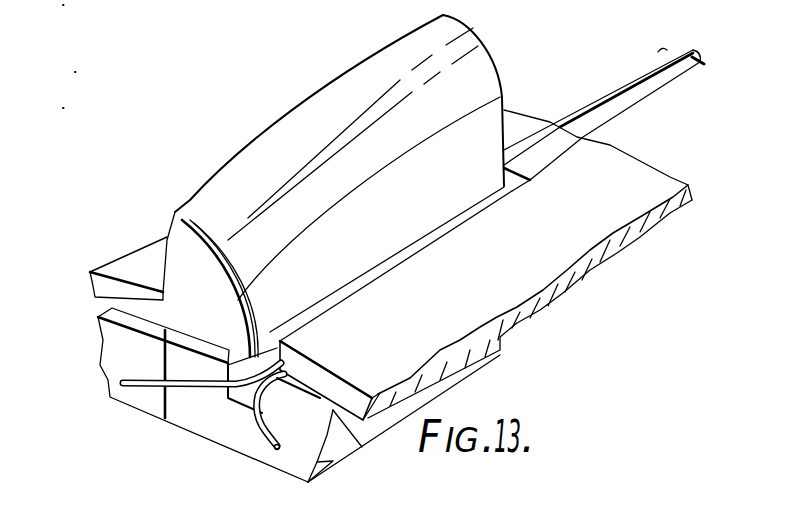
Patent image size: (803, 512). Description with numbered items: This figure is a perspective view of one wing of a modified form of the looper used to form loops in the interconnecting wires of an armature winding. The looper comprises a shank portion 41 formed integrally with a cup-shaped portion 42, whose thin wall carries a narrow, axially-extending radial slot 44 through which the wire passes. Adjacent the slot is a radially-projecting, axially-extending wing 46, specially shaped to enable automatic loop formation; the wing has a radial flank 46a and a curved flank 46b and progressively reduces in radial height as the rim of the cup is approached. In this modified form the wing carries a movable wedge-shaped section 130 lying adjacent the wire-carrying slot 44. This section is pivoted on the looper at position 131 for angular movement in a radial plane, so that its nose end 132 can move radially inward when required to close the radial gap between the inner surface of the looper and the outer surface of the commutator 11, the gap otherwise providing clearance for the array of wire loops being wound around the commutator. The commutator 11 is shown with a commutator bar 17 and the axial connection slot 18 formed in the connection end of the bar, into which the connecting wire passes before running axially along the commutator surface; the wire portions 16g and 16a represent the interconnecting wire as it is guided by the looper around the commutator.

The commutator 11 is at (100, 351).
The commutator bar 17 is at (175, 410).
The tube 16g is at (178, 387).
The tube end 16a is at (262, 437).
The axial connection slot 18 is at (278, 405).
The shank portion 41 is at (670, 176).
The cup-shaped portion 42 is at (362, 447).
The radial slot 44 is at (325, 310).
The wing 46 is at (330, 80).
The radial flank 46a is at (165, 255).
The curved flank 46b is at (270, 188).
The movable wedge-shaped section 130 is at (504, 110).
The pivot position 131 is at (703, 60).
The nose end 132 is at (243, 362).